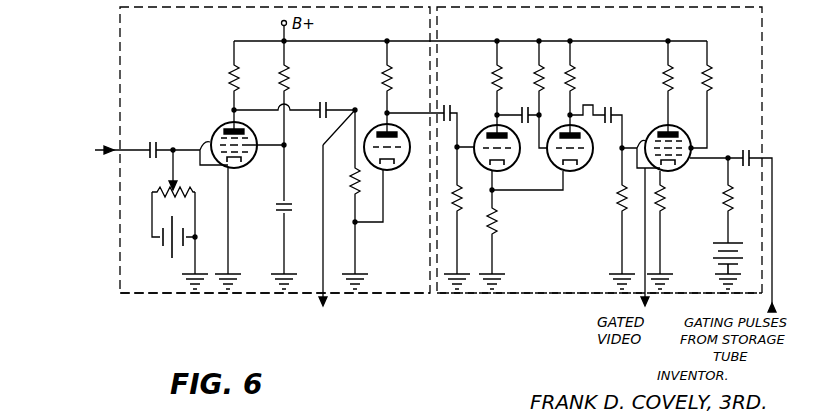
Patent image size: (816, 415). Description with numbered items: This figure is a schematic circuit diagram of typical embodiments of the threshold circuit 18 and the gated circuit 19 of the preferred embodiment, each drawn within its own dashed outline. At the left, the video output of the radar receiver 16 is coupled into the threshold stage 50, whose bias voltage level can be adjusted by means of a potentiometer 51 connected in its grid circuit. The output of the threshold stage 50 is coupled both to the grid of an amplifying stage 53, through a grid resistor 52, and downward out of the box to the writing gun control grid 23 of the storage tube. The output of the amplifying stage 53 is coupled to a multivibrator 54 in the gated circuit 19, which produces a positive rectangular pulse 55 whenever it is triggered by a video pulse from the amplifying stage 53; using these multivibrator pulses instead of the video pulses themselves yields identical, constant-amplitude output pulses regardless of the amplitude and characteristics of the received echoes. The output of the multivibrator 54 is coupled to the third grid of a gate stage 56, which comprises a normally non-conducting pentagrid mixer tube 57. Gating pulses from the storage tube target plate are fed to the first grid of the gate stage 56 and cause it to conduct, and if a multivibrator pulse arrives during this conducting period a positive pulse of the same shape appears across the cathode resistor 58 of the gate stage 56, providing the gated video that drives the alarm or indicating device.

The radar receiver 16 is at (83, 158).
The threshold circuit 18 is at (206, 295).
The gated circuit 19 is at (460, 297).
The writing gun control grid 23 is at (304, 253).
The threshold stage 50 is at (176, 90).
The potentiometer 51 is at (165, 190).
The grid resistor 52 is at (352, 186).
The amplifying stage 53 is at (411, 192).
The multivibrator 54 is at (563, 210).
The positive rectangular pulse 55 is at (588, 104).
The gate stage 56 is at (698, 201).
The pentagrid mixer tube 57 is at (672, 128).
The cathode resistor 58 is at (656, 206).